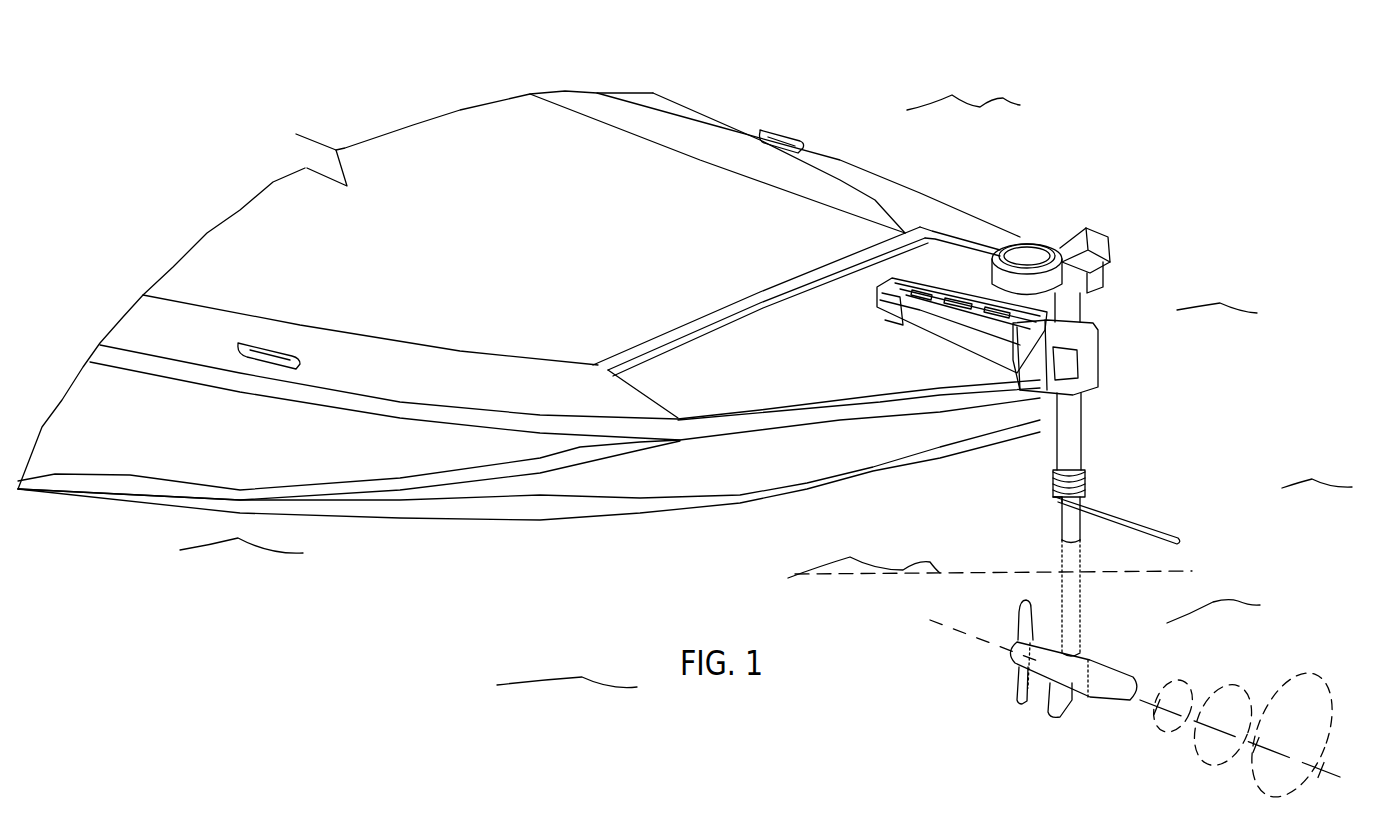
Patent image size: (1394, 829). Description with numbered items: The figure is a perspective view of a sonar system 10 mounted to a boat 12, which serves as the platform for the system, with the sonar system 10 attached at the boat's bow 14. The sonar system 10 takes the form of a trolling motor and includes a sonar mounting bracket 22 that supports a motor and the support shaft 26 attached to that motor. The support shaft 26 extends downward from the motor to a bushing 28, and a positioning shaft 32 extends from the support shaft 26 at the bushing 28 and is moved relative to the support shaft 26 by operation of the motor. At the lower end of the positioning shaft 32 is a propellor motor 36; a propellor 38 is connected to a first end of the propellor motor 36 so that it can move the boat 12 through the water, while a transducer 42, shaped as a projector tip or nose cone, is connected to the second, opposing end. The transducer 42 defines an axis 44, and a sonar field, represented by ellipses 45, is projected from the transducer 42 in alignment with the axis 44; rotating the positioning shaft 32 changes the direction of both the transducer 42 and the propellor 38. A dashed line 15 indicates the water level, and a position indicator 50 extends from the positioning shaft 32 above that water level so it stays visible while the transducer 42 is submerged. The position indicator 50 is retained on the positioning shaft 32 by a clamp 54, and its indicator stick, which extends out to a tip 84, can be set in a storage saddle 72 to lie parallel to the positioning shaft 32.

The sonar system 10 is at (1107, 165).
The boat 12 is at (426, 143).
The bow 14 is at (943, 213).
The dashed line 15 is at (1190, 571).
The sonar mounting bracket 22 is at (887, 313).
The support shaft 26 is at (1065, 446).
The bushing 28 is at (1085, 464).
The positioning shaft 32 is at (1066, 590).
The propellor motor 36 is at (1077, 677).
The propellor 38 is at (1023, 660).
The transducer 42 is at (1110, 677).
The axis 44 is at (1340, 768).
The ellipses 45 is at (1300, 685).
The position indicator 50 is at (1170, 490).
The clamp 54 is at (1083, 494).
The storage saddle 72 is at (1050, 499).
The tip 84 is at (1182, 538).